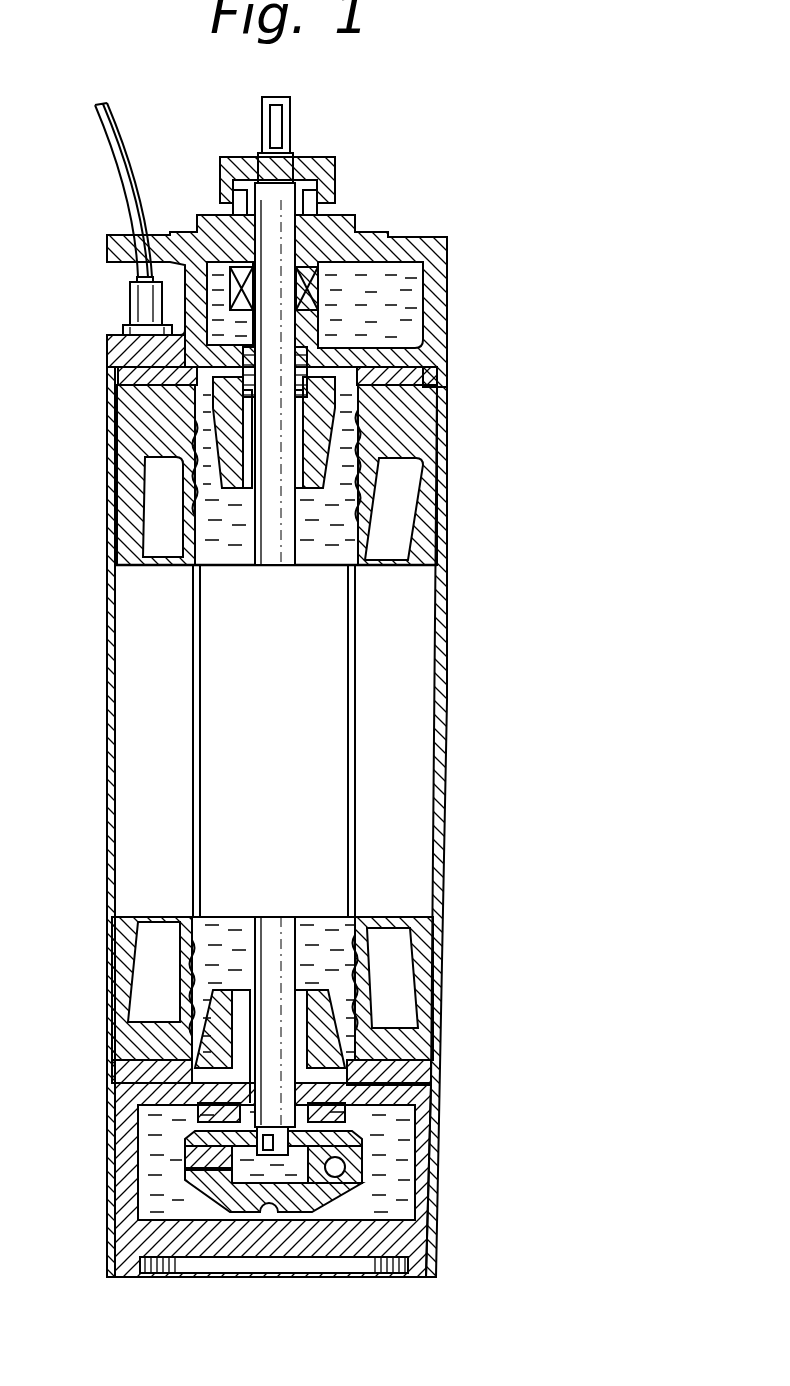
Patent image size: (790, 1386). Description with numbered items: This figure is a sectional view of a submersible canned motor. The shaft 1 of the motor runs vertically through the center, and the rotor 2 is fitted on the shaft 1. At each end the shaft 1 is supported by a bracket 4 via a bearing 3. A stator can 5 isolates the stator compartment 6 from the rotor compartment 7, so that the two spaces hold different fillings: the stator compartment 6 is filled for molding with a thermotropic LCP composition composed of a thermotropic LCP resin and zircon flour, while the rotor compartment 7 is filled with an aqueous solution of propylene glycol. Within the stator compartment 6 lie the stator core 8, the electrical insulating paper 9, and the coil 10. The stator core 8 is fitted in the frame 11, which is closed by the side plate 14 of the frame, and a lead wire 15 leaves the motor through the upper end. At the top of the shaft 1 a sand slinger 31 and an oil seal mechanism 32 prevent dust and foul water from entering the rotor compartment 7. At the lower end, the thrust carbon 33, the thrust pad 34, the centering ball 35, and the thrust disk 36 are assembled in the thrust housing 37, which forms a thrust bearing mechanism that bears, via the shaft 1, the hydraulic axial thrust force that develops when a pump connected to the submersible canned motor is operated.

The shaft 1 is at (275, 566).
The rotor 2 is at (297, 672).
The bearing 3 is at (242, 430).
The bracket 4 is at (112, 338).
The stator can 5 is at (386, 435).
The stator compartment 6 is at (423, 442).
The rotor compartment 7 is at (400, 325).
The stator core 8 is at (395, 727).
The electrical insulating paper 9 is at (160, 547).
The coil 10 is at (388, 484).
The frame 11 is at (447, 815).
The side plate 14 is at (433, 377).
The lead wire 15 is at (128, 190).
The sand slinger 31 is at (237, 162).
The oil seal mechanism 32 is at (305, 292).
The thrust carbon 33 is at (362, 1137).
The thrust pad 34 is at (362, 1158).
The centering ball 35 is at (348, 1207).
The thrust disk 36 is at (313, 1193).
The thrust housing 37 is at (198, 1237).